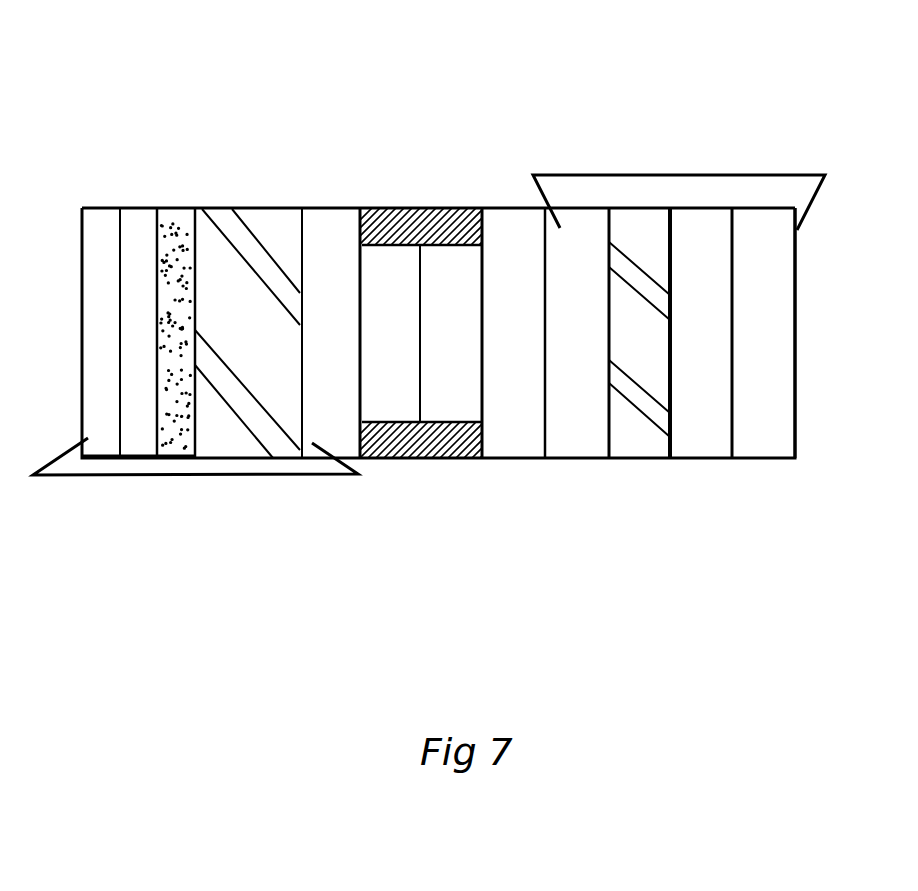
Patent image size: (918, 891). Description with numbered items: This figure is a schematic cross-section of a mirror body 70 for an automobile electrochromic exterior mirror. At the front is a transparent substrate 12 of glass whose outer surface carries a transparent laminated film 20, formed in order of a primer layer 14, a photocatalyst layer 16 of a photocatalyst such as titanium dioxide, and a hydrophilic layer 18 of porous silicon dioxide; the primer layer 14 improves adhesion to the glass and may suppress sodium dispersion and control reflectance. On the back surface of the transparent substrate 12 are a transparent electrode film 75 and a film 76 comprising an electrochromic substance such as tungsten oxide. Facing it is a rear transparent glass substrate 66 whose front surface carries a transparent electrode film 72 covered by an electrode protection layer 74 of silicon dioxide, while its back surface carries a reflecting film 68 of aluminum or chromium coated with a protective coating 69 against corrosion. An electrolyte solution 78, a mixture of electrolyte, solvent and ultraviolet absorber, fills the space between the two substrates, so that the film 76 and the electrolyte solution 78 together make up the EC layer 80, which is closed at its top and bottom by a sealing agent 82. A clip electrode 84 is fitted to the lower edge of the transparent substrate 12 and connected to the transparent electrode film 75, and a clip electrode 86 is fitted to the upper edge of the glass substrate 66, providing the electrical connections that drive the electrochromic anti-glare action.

The mirror body 70 is at (540, 98).
The hydrophilic layer 18 is at (103, 225).
The photocatalyst layer 16 is at (140, 225).
The primer layer 14 is at (175, 220).
The transparent substrate 12 is at (258, 225).
The transparent electrode film 75 is at (323, 225).
The laminated film 20 is at (197, 497).
The clip electrode 84 is at (287, 477).
The EC layer 80 is at (373, 131).
The film comprising an EC substance 76 is at (392, 268).
The electrolyte solution 78 is at (450, 270).
The sealing member 82 is at (422, 450).
The electrode protection layer 74 is at (515, 440).
The transparent electrode film 72 is at (578, 440).
The transparent glass substrate 66 is at (638, 440).
The reflecting film 68 is at (703, 440).
The protective coating 69 is at (766, 440).
The clip electrode 86 is at (640, 175).